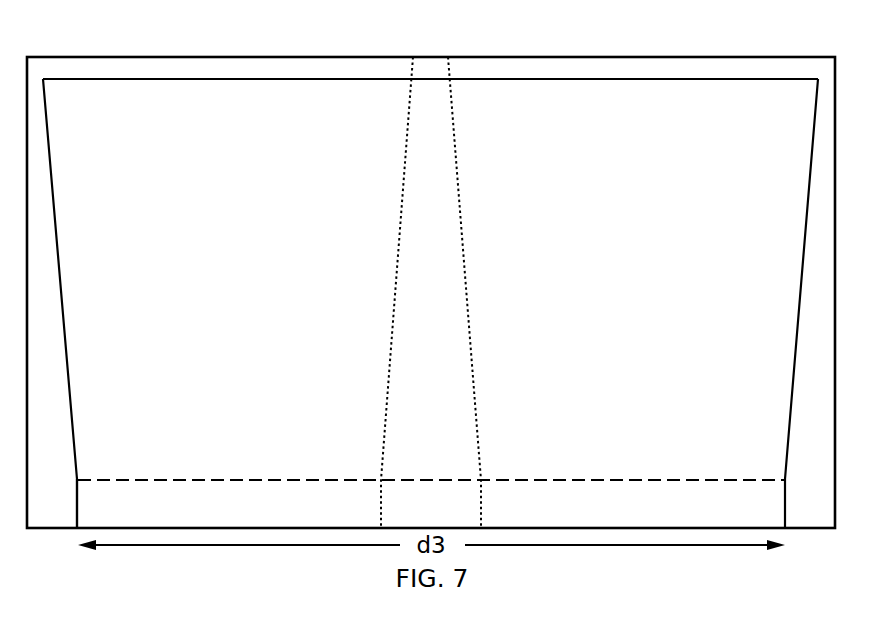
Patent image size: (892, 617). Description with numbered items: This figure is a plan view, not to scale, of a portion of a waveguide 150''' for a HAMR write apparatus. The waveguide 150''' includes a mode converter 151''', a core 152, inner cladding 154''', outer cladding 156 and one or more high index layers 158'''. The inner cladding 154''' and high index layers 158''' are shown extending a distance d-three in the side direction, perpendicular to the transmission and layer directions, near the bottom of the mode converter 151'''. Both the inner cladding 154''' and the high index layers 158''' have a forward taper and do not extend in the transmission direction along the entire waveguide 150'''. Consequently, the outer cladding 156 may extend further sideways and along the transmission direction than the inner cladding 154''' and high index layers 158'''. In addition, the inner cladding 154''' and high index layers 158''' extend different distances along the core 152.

The waveguide 150''' is at (431, 264).
The mode converter 151''' is at (455, 119).
The core 152 is at (431, 292).
The inner cladding 154''' is at (430, 303).
The outer cladding 156 is at (52, 503).
The high index layer 158''' is at (431, 389).